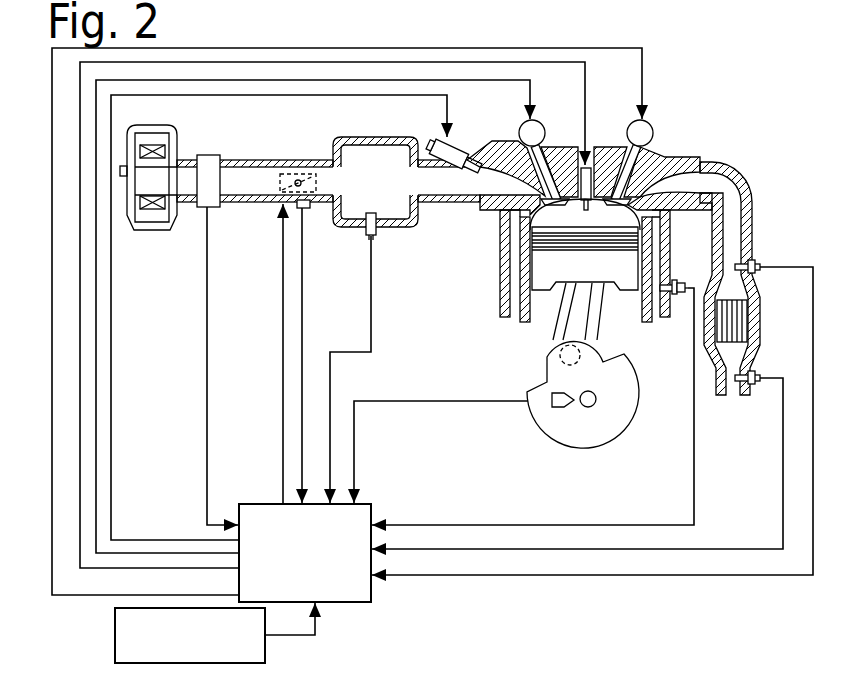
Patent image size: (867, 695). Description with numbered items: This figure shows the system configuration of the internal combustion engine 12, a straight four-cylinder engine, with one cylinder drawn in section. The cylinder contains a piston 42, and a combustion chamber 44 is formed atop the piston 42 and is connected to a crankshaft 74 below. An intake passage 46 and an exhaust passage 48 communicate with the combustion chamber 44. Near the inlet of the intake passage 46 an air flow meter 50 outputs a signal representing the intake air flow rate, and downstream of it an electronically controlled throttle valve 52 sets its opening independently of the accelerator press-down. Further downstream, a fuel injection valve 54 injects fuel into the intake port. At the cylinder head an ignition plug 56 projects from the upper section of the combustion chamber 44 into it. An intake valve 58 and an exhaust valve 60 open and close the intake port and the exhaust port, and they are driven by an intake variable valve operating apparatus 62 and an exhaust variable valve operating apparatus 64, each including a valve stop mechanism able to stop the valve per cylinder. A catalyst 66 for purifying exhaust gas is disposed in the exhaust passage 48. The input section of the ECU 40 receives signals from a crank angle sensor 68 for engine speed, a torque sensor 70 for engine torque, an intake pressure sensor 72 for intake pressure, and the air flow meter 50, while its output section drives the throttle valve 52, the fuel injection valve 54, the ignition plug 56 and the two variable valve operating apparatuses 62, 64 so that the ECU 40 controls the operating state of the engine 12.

The internal combustion engine 12 is at (494, 280).
The ECU 40 is at (373, 507).
The piston 42 is at (550, 277).
The combustion chamber 44 is at (593, 219).
The intake passage 46 is at (357, 168).
The exhaust passage 48 is at (714, 178).
The air flow meter 50 is at (212, 160).
The throttle valve 52 is at (292, 172).
The fuel injection valve 54 is at (452, 146).
The ignition plug 56 is at (584, 180).
The intake valve 58 is at (493, 164).
The exhaust valve 60 is at (642, 171).
The intake variable valve operating apparatus 62 is at (533, 125).
The exhaust variable valve operating apparatus 64 is at (646, 128).
The catalyst 66 is at (748, 328).
The crank angle sensor 68 is at (560, 410).
The torque sensor 70 is at (266, 641).
The intake pressure sensor 72 is at (371, 240).
The crankshaft 74 is at (593, 408).